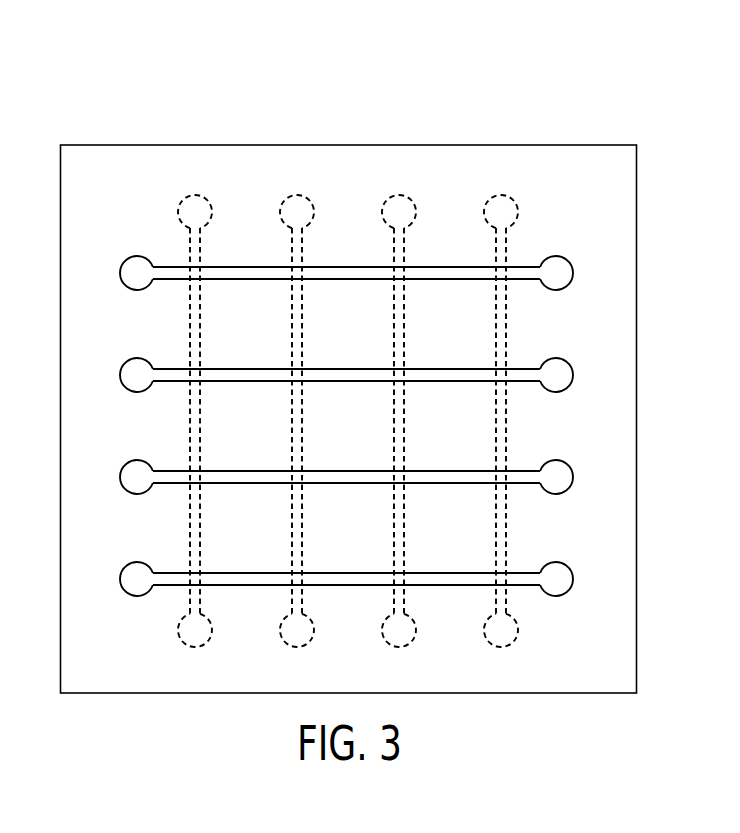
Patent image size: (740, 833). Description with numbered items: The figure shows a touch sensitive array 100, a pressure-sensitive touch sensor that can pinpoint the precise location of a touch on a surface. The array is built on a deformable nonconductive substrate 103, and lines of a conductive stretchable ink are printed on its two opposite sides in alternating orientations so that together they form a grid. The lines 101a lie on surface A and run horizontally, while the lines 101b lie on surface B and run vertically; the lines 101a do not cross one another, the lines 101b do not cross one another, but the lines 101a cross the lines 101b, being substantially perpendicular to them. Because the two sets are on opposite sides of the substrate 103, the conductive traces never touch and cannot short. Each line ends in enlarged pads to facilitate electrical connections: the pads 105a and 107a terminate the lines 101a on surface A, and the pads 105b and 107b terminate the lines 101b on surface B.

The touch sensitive array 100 is at (104, 77).
The deformable nonconductive substrate 103 is at (232, 162).
The lines on surface A 101a is at (257, 266).
The lines on surface B 101b is at (510, 541).
The enlarged pads on surface A 105a is at (131, 277).
The enlarged pads on surface B 105b is at (276, 635).
The enlarged pads on surface A 107a is at (563, 275).
The enlarged pads on surface B 107b is at (492, 208).